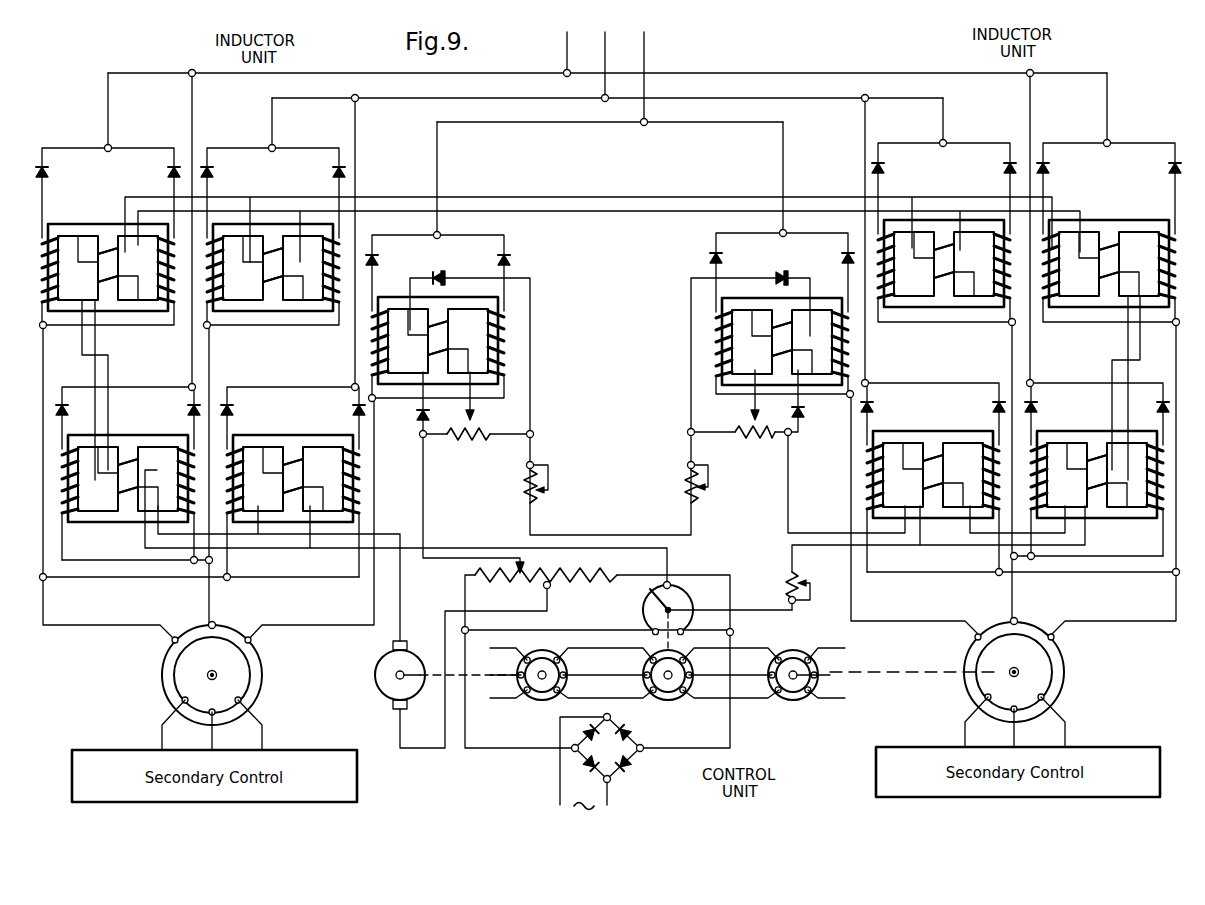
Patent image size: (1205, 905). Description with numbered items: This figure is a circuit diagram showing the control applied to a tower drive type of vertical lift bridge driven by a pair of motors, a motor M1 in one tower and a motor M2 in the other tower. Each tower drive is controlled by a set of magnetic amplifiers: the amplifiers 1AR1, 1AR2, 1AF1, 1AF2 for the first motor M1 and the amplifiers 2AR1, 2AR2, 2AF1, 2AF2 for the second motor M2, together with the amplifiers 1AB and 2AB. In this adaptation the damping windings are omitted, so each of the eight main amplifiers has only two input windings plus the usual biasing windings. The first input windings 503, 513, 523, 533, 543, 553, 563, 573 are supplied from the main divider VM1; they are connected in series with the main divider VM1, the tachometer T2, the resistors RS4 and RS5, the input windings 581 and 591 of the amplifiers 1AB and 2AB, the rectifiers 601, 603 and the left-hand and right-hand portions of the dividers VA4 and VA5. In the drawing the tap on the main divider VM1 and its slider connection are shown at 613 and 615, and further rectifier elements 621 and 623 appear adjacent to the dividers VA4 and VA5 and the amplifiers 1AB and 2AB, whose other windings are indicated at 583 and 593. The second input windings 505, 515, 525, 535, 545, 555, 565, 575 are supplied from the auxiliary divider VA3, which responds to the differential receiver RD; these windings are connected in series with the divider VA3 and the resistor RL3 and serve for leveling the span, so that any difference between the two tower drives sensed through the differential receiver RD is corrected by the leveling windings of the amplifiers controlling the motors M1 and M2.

The input winding 503 is at (99, 288).
The input winding 505 is at (126, 287).
The input winding 513 is at (258, 252).
The input winding 515 is at (290, 290).
The input winding 523 is at (141, 456).
The input winding 525 is at (110, 495).
The input winding 533 is at (306, 456).
The input winding 535 is at (276, 495).
The input winding 543 is at (957, 248).
The input winding 545 is at (960, 290).
The input winding 553 is at (1095, 246).
The input winding 555 is at (1090, 290).
The input winding 563 is at (945, 455).
The input winding 565 is at (950, 490).
The input winding 573 is at (1080, 455).
The input winding 575 is at (1108, 490).
The input winding 581 is at (450, 316).
The winding 583 is at (418, 362).
The input winding 591 is at (768, 362).
The contact of inductor unit 2AB 593 is at (765, 322).
The rectifier 601 is at (437, 278).
The rectifier 603 is at (801, 424).
The tap of voltage divider VM1 613 is at (549, 588).
The slider of voltage divider VM1 615 is at (524, 560).
The rectifier 621 is at (420, 420).
The rectifier 623 is at (778, 278).
The amplifier 1AR1 is at (62, 222).
The amplifier 1AR2 is at (288, 226).
The amplifier 1AF1 is at (120, 433).
The amplifier 1AF2 is at (282, 434).
The amplifier 1AB is at (505, 343).
The amplifier 2AB is at (722, 340).
The amplifier 2AR1 is at (930, 222).
The amplifier 2AR2 is at (1147, 220).
The amplifier 2AF1 is at (926, 432).
The amplifier 2AF2 is at (1050, 432).
The divider VA4 is at (469, 438).
The divider VA5 is at (752, 438).
The auxiliary divider VA3 is at (684, 600).
The resistor RS4 is at (527, 490).
The resistor RS5 is at (688, 486).
The resistor RL3 is at (790, 580).
The main divider VM1 is at (570, 575).
The tachometer T2 is at (386, 666).
The differential receiver RD is at (690, 668).
The motor M1 is at (297, 687).
The motor M2 is at (1108, 684).